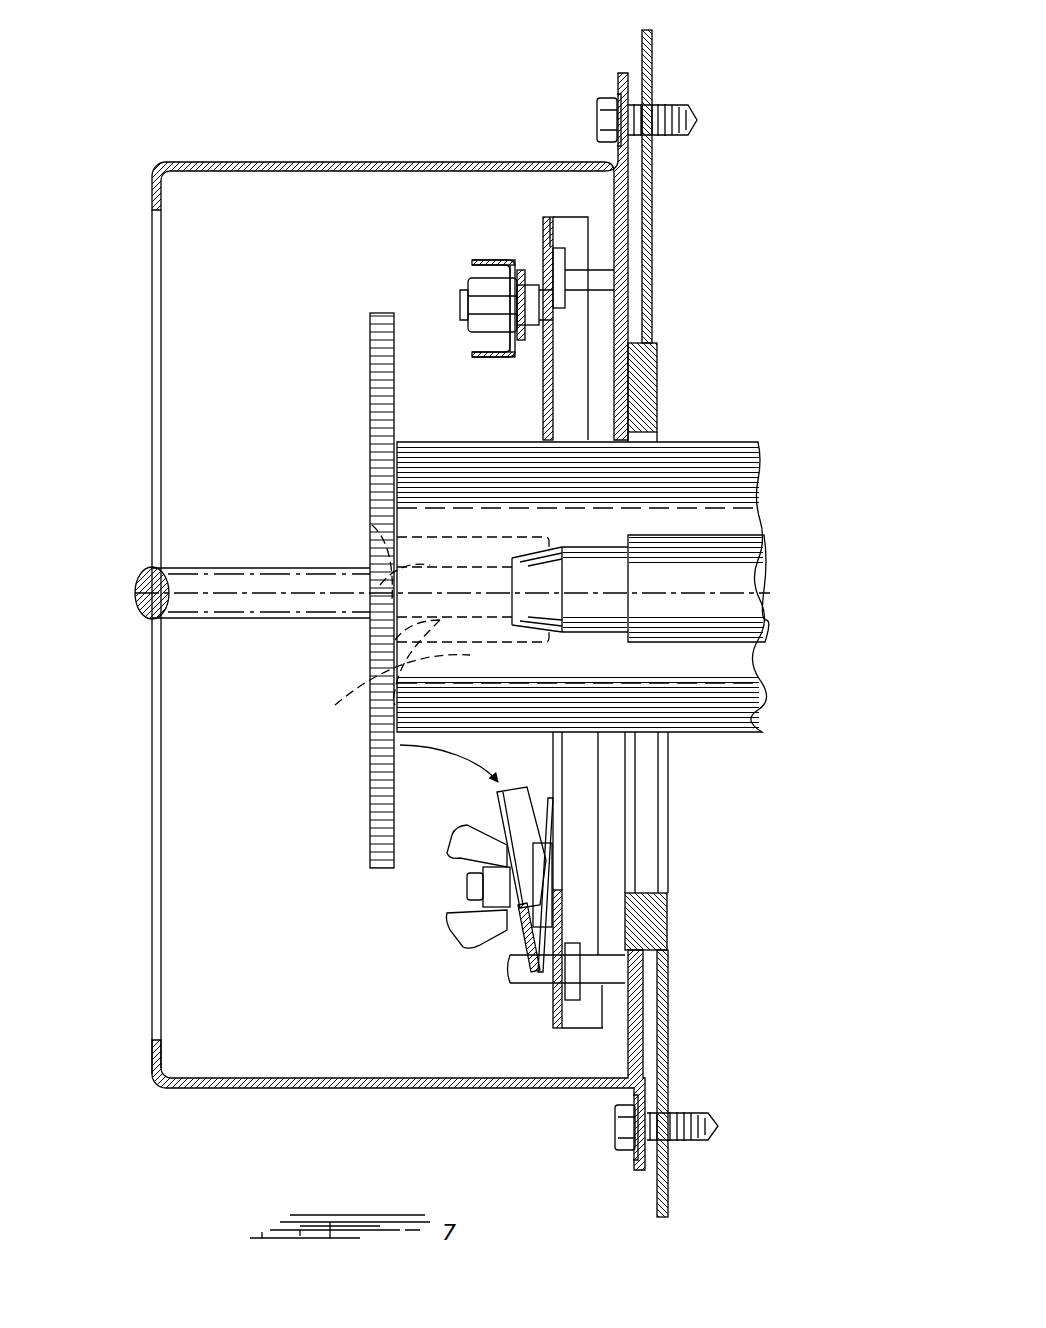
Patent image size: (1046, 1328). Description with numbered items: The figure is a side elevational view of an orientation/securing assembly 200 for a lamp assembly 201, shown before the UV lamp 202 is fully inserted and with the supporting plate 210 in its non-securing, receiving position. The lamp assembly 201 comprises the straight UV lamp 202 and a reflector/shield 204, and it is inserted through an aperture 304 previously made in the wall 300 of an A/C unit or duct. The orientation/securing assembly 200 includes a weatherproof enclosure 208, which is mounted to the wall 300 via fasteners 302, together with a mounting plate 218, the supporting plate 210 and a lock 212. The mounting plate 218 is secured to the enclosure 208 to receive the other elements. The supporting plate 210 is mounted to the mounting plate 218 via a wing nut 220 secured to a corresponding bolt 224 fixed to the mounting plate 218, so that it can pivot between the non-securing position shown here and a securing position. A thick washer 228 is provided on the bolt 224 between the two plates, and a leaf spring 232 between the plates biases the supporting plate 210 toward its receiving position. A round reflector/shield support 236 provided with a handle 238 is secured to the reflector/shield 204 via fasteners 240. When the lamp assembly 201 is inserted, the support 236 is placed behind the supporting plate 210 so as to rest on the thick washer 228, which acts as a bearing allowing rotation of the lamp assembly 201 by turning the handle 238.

The orientation/securing assembly 200 is at (124, 162).
The lamp assembly 201 is at (746, 436).
The UV lamp 202 is at (733, 577).
The reflector/shield 204 is at (677, 457).
The weatherproof enclosure 208 is at (155, 430).
The supporting plate 210 is at (522, 935).
The lock 212 is at (490, 262).
The mounting plate 218 is at (546, 235).
The wing nut 220 is at (458, 925).
The bolt 224 is at (467, 886).
The thick washer 228 is at (548, 862).
The leaf spring 232 is at (548, 822).
The reflector/shield support 236 is at (370, 792).
The handle 238 is at (163, 575).
The fasteners 240 is at (440, 640).
The wall 300 is at (652, 38).
The fasteners 302 is at (697, 120).
The aperture 304 is at (665, 880).